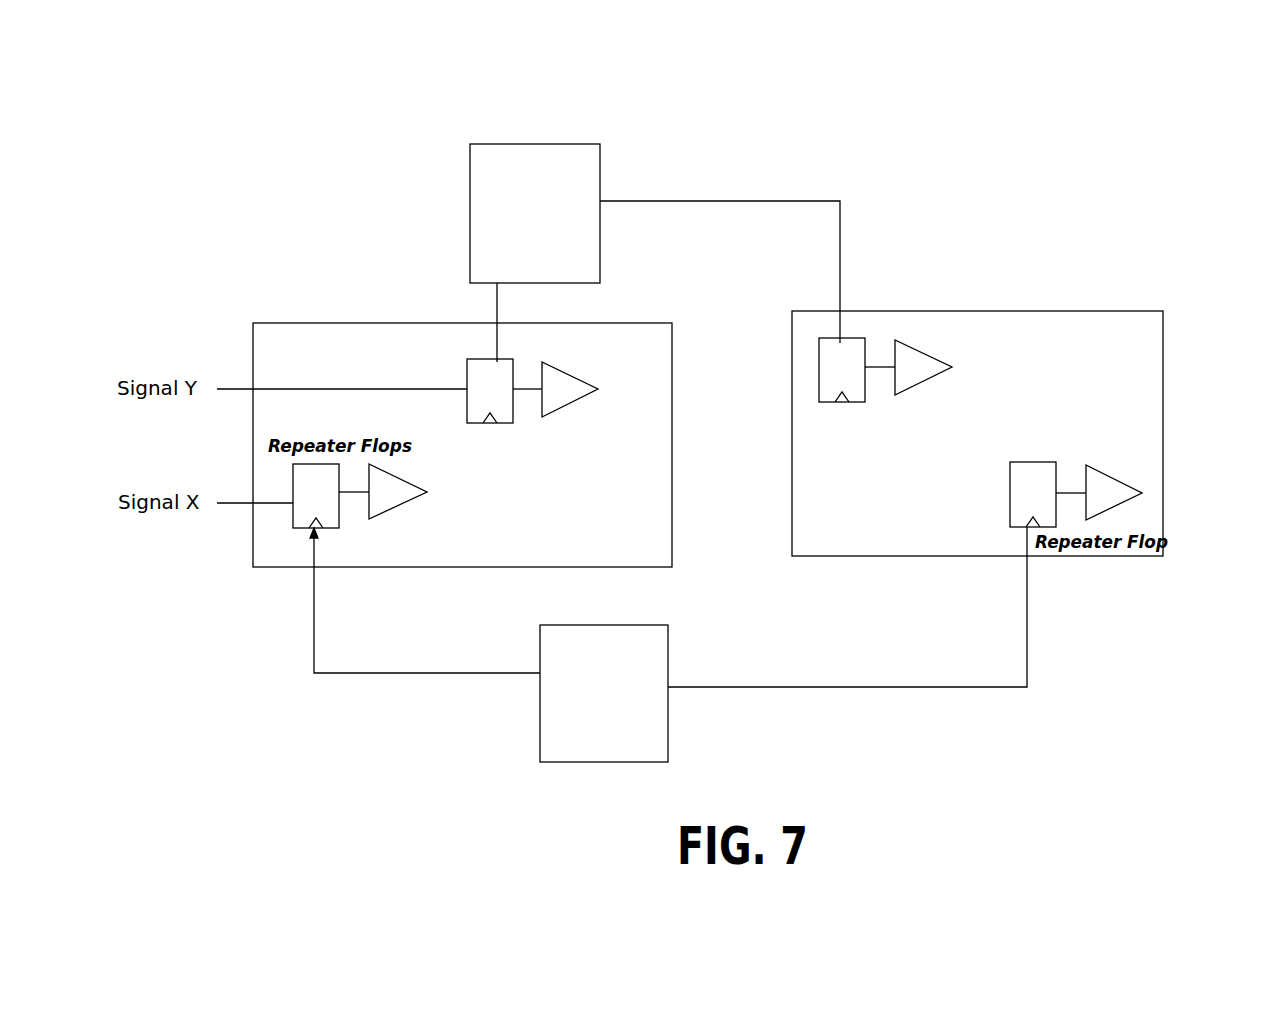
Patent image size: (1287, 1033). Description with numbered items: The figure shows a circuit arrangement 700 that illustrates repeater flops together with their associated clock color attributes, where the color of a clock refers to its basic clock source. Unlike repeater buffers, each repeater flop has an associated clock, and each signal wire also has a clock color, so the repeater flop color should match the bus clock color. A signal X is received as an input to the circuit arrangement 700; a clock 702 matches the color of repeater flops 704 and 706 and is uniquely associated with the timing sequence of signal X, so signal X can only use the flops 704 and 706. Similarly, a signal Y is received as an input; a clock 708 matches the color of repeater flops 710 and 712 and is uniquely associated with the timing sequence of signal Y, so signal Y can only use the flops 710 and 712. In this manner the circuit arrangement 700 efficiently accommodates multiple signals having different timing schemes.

The circuit arrangement 700 is at (233, 93).
The clock 702 is at (530, 722).
The repeater flop 704 is at (355, 540).
The repeater flop 706 is at (1100, 450).
The clock 708 is at (613, 167).
The repeater flop 710 is at (528, 427).
The repeater flop 712 is at (877, 415).